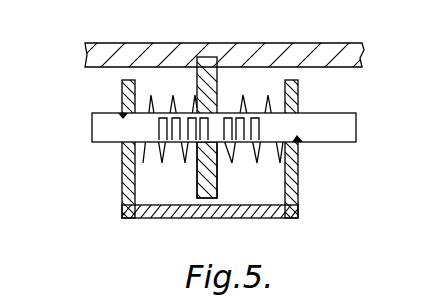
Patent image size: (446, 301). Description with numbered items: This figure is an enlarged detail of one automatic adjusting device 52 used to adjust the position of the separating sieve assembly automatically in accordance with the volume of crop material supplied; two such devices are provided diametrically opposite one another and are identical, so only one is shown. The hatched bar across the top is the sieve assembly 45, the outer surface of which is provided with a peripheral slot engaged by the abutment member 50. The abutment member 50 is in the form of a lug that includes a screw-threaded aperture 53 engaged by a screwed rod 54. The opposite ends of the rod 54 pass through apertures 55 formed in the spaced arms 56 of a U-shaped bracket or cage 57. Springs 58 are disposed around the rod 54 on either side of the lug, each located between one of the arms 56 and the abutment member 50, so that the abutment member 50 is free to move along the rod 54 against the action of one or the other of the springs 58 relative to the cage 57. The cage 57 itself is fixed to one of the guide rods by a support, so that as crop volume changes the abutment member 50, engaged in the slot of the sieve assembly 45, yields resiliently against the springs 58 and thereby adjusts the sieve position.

The plate 45 is at (102, 53).
The abutment member 50 is at (213, 60).
The automatic adjusting device 52 is at (205, 161).
The screw-threaded aperture 53 is at (200, 153).
The screwed rod 54 is at (95, 132).
The aperture 55 is at (120, 113).
The arm 56 is at (128, 185).
The U-shaped bracket or cage 57 is at (247, 226).
The spring 58 is at (152, 112).